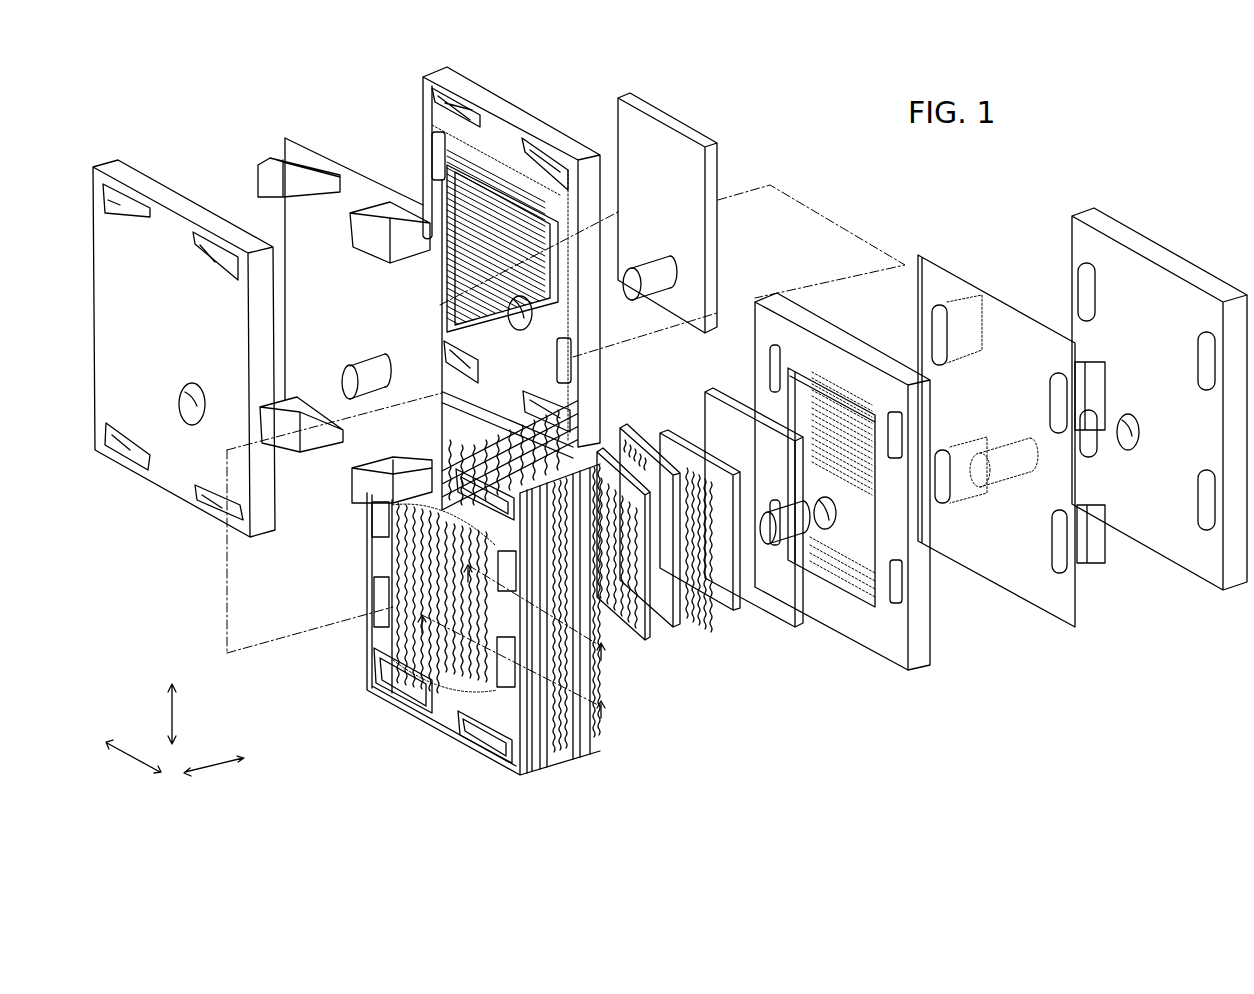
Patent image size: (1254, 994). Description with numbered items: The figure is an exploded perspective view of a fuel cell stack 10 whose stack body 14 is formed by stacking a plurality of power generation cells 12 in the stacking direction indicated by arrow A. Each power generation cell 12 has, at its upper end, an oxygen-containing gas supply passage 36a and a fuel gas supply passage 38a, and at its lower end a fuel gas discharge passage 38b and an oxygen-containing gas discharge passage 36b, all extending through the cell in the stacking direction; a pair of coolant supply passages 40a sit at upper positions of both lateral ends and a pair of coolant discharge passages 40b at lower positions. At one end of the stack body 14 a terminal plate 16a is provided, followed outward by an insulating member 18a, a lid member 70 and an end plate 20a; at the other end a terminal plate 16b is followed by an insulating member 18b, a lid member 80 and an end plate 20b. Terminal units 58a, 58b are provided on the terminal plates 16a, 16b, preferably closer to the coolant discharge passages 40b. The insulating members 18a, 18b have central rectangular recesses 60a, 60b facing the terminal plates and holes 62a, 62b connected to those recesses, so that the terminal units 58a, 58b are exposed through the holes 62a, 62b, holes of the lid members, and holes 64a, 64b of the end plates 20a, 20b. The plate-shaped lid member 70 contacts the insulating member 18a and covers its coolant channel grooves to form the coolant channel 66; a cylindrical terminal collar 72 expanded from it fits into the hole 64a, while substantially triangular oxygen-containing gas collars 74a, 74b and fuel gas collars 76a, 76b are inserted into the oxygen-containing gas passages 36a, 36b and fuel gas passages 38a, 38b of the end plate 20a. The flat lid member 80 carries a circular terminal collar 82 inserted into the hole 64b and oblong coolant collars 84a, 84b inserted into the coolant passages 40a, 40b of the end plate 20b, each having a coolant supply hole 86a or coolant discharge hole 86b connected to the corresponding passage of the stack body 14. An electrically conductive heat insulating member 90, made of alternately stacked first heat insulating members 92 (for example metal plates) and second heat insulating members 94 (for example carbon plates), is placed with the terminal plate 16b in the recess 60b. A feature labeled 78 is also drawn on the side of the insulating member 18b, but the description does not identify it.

The fuel cell stack 10 is at (1064, 160).
The power generation cell 12 is at (600, 765).
The stack body 14 is at (536, 623).
The terminal plate 16a is at (650, 103).
The terminal plate 16b is at (798, 628).
The insulating member 18a is at (471, 81).
The insulating member 18b is at (757, 298).
The end plate 20a is at (101, 163).
The end plate 20b is at (1122, 213).
The oxygen-containing gas supply passage 36a is at (216, 262).
The oxygen-containing gas discharge passage 36b is at (130, 458).
The fuel gas supply passage 38a is at (132, 205).
The fuel gas discharge passage 38b is at (215, 510).
The coolant supply passage 40a is at (434, 150).
The coolant discharge passage 40b is at (580, 367).
The terminal unit 58a is at (648, 272).
The terminal unit 58b is at (767, 600).
The rectangular recess 60a is at (561, 203).
The rectangular recess 60b is at (835, 485).
The hole 62a is at (510, 311).
The hole 62b is at (827, 535).
The hole 64a is at (178, 404).
The hole 64b is at (1142, 432).
The coolant channel 66 is at (550, 222).
The lid member 70 is at (285, 136).
The cylindrical terminal collar 72 is at (350, 366).
The oxygen-containing gas collar 74a is at (360, 240).
The oxygen-containing gas collar 74b is at (290, 400).
The fuel gas collar 76a is at (262, 172).
The fuel gas collar 76b is at (397, 460).
The heater flow channel 78 is at (822, 360).
The lid member 80 is at (948, 256).
The terminal collar 82 is at (1012, 493).
The coolant collar 84a is at (970, 347).
The coolant collar 84b is at (963, 492).
The coolant supply hole 86a is at (937, 337).
The coolant discharge hole 86b is at (947, 460).
The heat insulating member 90 is at (690, 583).
The first heat insulating member 92 is at (644, 652).
The second heat insulating member 94 is at (665, 614).